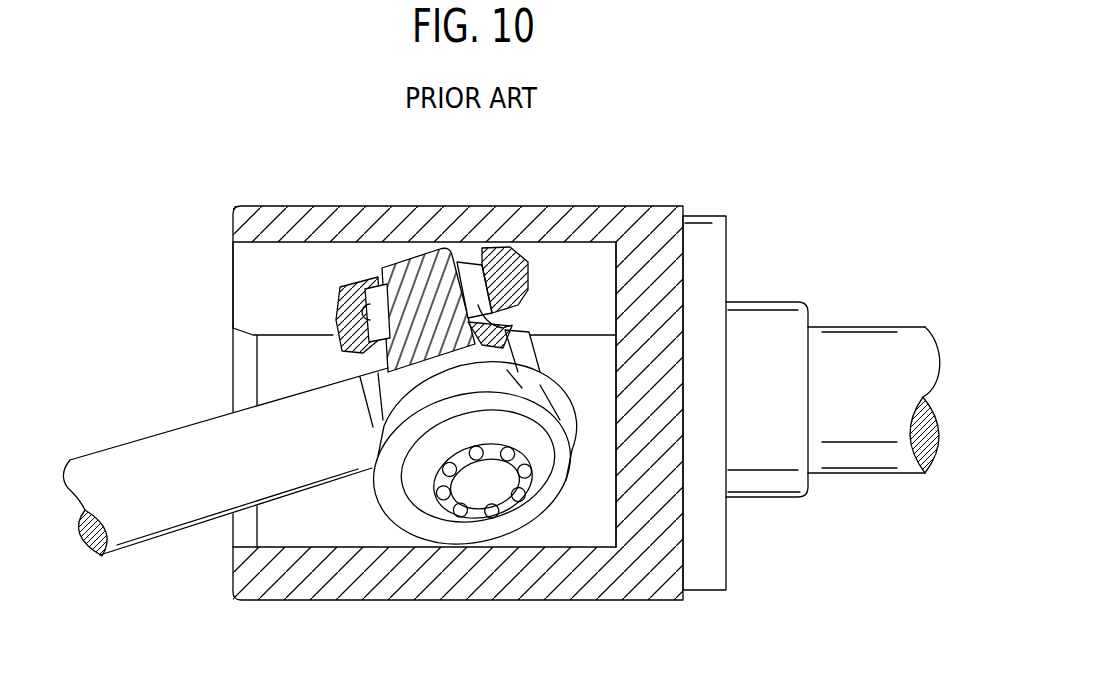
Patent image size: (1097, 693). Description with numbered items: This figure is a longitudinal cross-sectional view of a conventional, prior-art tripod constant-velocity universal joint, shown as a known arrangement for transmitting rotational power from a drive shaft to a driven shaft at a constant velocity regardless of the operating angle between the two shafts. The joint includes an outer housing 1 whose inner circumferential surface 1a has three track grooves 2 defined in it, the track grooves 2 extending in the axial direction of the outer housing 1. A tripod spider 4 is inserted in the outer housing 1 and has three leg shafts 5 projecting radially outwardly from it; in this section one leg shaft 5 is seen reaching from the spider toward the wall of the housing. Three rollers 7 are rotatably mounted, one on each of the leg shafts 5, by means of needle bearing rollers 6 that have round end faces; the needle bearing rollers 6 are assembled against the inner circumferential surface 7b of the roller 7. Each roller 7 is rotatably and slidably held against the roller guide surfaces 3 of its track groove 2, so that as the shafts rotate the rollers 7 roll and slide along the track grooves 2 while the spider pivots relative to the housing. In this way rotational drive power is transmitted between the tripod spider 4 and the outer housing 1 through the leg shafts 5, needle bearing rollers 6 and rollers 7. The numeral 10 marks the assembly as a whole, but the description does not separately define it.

The outer housing 1 is at (262, 228).
The inner circumferential surface 1a is at (265, 372).
The track grooves 2 is at (573, 262).
The roller guide surfaces 3 is at (263, 288).
The tripod spider 4 is at (505, 352).
The leg shafts 5 is at (393, 250).
The needle bearing rollers 6 is at (459, 262).
The rollers 7 is at (527, 250).
The inner circumferential surface of the roller 7b is at (352, 336).
The prior art mechanism 10 is at (746, 165).